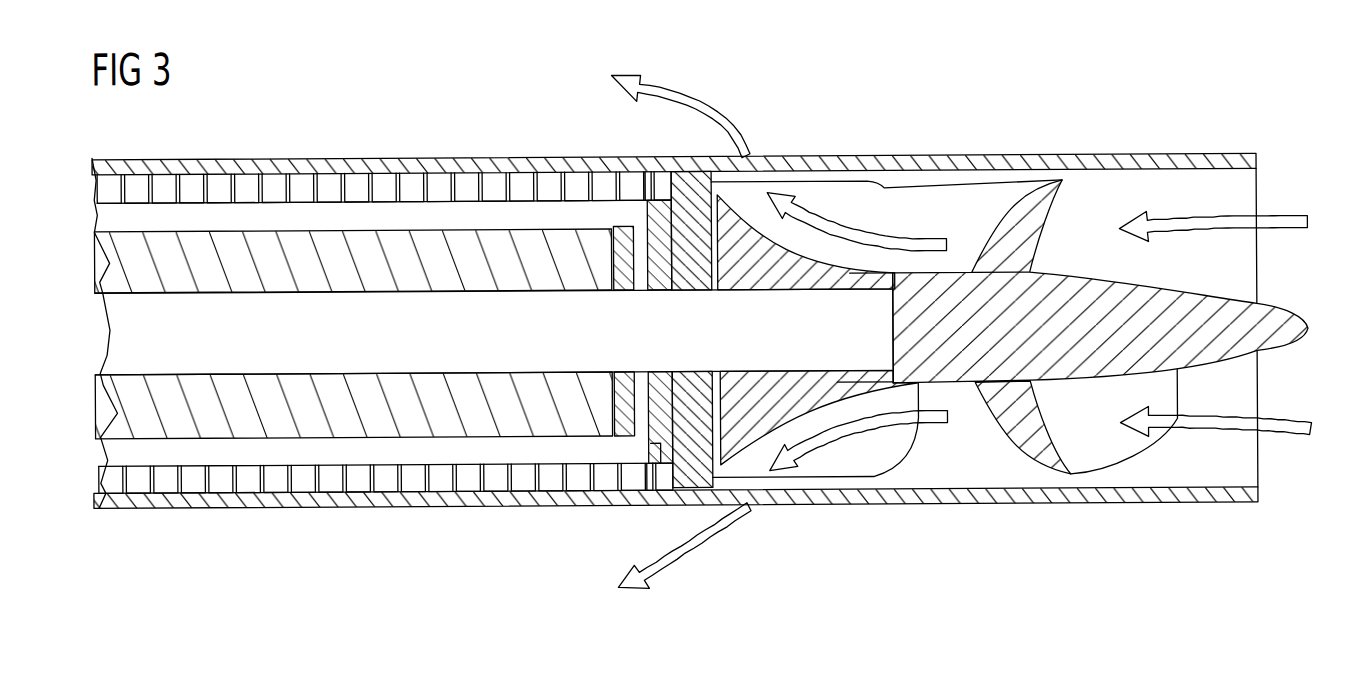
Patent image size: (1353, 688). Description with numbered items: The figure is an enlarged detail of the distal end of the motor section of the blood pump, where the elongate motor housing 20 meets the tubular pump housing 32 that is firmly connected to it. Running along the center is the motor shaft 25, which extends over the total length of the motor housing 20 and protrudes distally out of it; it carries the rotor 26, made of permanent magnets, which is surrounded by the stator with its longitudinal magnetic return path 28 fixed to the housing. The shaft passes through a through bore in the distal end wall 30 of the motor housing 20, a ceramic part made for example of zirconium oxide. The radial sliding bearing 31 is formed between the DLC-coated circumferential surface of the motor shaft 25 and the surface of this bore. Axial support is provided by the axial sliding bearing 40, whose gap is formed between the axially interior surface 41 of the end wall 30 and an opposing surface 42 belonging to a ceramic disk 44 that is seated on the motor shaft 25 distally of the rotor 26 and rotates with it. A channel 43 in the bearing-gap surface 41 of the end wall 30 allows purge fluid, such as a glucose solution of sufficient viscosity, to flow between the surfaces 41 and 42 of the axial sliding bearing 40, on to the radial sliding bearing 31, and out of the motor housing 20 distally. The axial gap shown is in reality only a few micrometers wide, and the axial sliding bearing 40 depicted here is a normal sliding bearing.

The motor housing 20 is at (385, 124).
The motor shaft 25 is at (408, 347).
The rotor 26 is at (514, 423).
The magnetic return path 28 is at (443, 497).
The distal end wall 30 is at (660, 171).
The radial sliding bearing 31 is at (680, 292).
The pump housing 32 is at (866, 506).
The axial sliding bearing 40 is at (637, 457).
The axially interior surface 41 is at (640, 492).
The opposing surface 42 is at (640, 371).
The channel 43 is at (654, 218).
The ceramic disk 44 is at (618, 370).